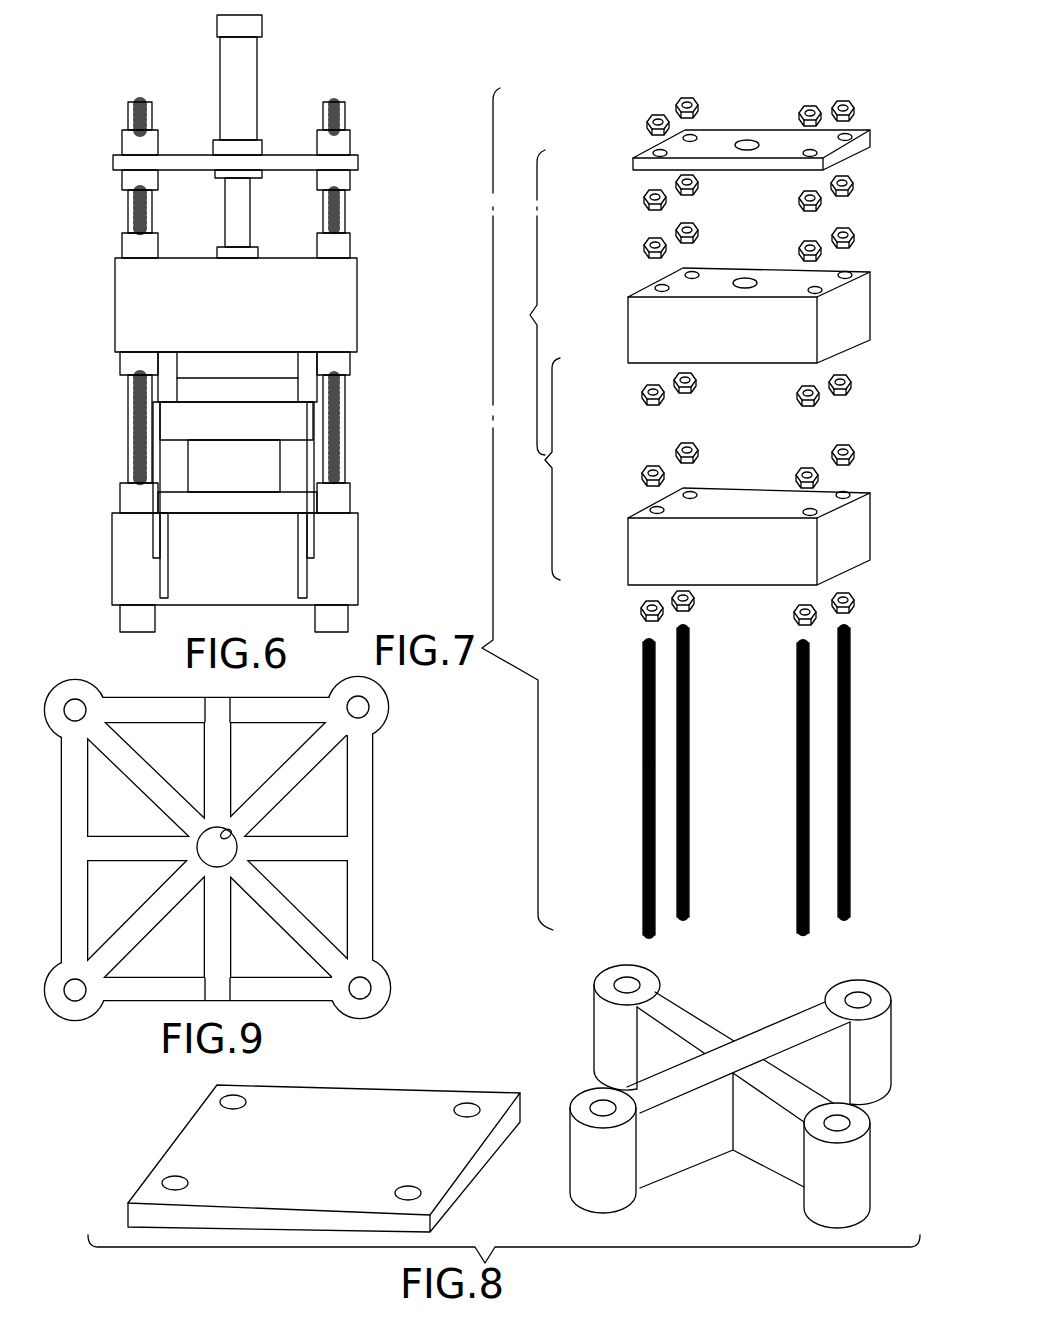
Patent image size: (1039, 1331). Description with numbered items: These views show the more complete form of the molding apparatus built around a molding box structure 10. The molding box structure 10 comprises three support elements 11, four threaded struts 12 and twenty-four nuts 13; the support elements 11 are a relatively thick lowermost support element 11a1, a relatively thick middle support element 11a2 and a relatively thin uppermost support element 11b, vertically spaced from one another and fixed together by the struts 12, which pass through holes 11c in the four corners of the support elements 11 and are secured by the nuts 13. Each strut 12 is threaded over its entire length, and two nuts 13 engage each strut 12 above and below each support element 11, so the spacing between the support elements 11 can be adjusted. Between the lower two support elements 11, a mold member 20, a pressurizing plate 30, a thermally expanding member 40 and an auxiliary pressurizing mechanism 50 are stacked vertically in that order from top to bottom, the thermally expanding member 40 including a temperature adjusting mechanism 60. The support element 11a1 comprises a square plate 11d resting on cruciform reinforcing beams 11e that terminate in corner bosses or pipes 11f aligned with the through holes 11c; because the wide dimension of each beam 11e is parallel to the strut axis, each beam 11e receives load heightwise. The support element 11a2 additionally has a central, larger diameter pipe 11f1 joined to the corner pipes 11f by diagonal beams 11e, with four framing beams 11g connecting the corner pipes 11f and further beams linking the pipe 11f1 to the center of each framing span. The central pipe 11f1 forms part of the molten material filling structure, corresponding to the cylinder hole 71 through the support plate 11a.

In FIG. 6, the molding box structure 10 is at (368, 187).
In FIG. 7, the support elements 11 is at (521, 302).
In FIG. 7, the support plate 11a is at (532, 469).
In FIG. 7, the thicker support element 11a1 is at (628, 551).
In FIG. 7, the support element 11a2 is at (628, 358).
In FIG. 7, the thin support element 11b is at (632, 160).
In FIG. 7, the holes 11c is at (655, 507).
In FIG. 8, the holes 11c is at (222, 1103).
In FIG. 8, the square plate 11d is at (190, 1155).
In FIG. 8, the reinforcing beams 11e is at (781, 1152).
In FIG. 9, the bosses or pipes 11f is at (90, 684).
In FIG. 8, the bosses or pipes 11f is at (593, 1020).
In FIG. 9, the central boss or pipe 11f1 is at (255, 862).
In FIG. 9, the framing beams 11g is at (151, 696).
In FIG. 6, the threaded struts 12 is at (137, 102).
In FIG. 7, the threaded struts 12 is at (643, 764).
In FIG. 6, the nuts 13 is at (158, 141).
In FIG. 7, the nuts 13 is at (648, 112).
In FIG. 6, the mold member 20 is at (313, 364).
In FIG. 6, the pressurizing plate 30 is at (297, 418).
In FIG. 6, the thermally expanding member 40 is at (292, 463).
In FIG. 6, the auxiliary pressurizing mechanism 50 is at (178, 488).
In FIG. 6, the temperature adjusting mechanism 60 is at (154, 462).
In FIG. 7, the cylinder hole 71 is at (758, 138).
In FIG. 9, the cylinder hole 71 is at (232, 833).